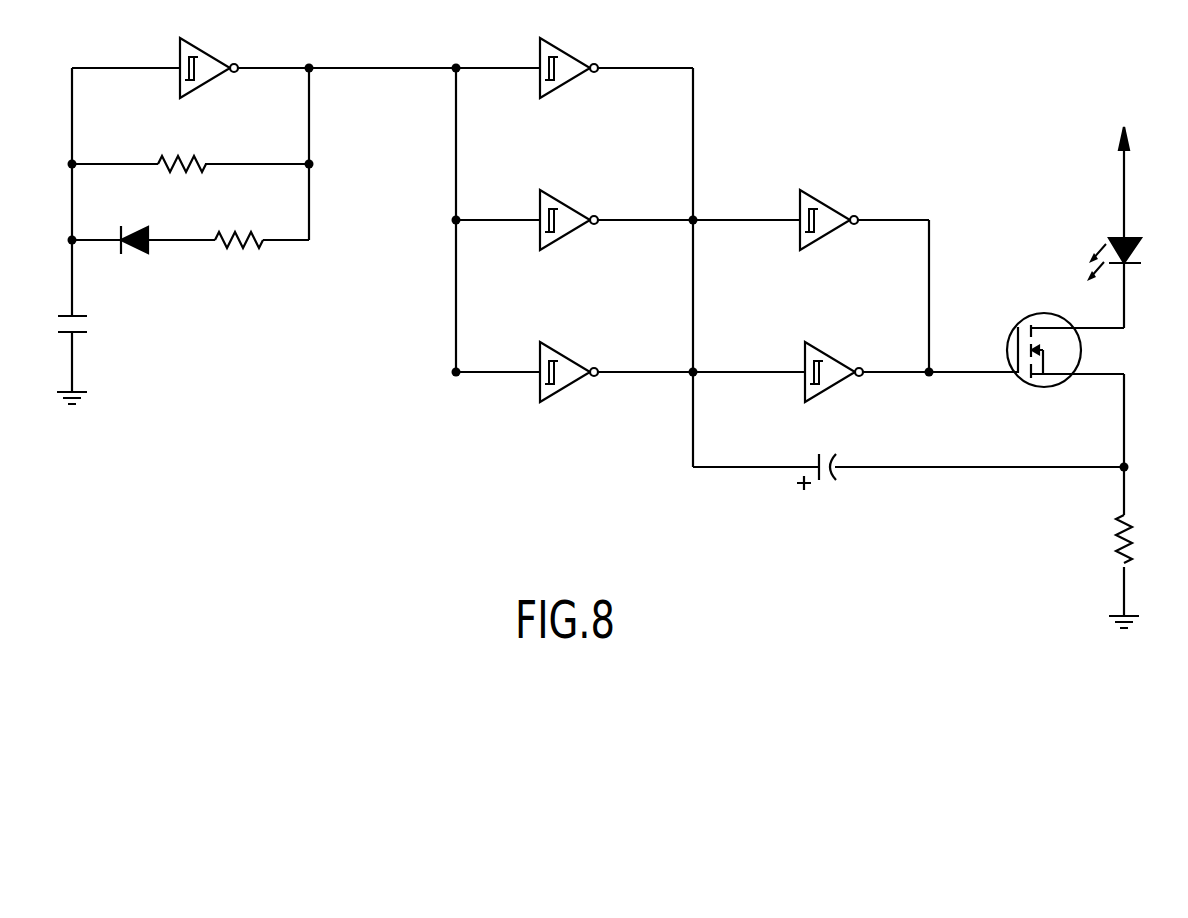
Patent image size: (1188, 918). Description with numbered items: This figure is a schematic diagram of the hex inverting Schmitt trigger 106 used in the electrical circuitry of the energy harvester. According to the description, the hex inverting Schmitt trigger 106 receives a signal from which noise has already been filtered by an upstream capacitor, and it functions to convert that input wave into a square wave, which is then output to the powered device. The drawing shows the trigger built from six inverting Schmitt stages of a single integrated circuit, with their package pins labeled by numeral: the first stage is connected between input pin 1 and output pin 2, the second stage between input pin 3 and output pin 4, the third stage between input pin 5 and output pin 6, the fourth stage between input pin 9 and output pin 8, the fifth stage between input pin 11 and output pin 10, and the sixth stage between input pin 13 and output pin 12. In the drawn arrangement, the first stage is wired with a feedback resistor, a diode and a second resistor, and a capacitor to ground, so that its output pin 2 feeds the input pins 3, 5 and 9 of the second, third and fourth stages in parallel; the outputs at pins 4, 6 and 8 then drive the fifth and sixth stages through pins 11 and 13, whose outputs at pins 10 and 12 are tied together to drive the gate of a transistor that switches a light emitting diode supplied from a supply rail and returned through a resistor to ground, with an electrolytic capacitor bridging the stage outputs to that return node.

The hex inverting Schmitt trigger 106 is at (432, 450).
The input pin 1 of Schmitt inverter U1-A 1 is at (126, 55).
The output pin 2 of Schmitt inverter U1-A 2 is at (273, 55).
The input pin 3 of Schmitt inverter U1-B 3 is at (498, 55).
The output pin 4 of Schmitt inverter U1-B 4 is at (645, 55).
The input pin 5 of Schmitt inverter U1-C / source pin 5 of Q1 5 is at (790, 261).
The output pin 6 of Schmitt inverter U1-C 6 is at (645, 207).
The output pin 8 of Schmitt inverter U1-D 8 is at (645, 359).
The input pin 9 of Schmitt inverter U1-D 9 is at (498, 359).
The output pin 10 of Schmitt inverter U1-E 10 is at (893, 207).
The input pin 11 of Schmitt inverter U1-E 11 is at (746, 207).
The output pin 12 of Schmitt inverter U1-F 12 is at (940, 359).
The input pin 13 of Schmitt inverter U1-F 13 is at (749, 359).